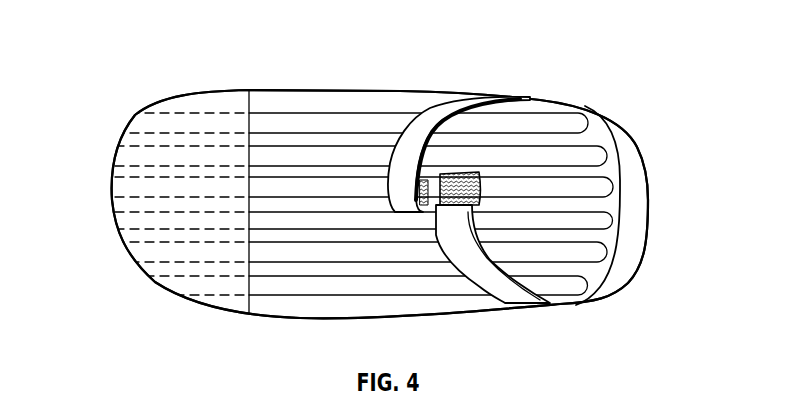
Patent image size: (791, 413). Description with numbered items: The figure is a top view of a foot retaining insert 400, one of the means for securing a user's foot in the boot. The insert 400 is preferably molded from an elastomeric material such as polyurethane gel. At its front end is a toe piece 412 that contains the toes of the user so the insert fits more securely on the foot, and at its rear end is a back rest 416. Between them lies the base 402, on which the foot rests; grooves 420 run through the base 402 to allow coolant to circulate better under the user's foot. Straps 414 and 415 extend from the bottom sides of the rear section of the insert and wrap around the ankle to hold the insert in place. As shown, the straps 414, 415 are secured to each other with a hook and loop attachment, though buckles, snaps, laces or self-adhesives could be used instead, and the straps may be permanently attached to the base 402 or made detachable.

The insert 400 is at (100, 60).
The base 402 is at (441, 313).
The toe piece 412 is at (190, 286).
The strap 414 is at (462, 107).
The strap 415 is at (455, 205).
The back rest 416 is at (636, 203).
The grooves 420 is at (318, 285).